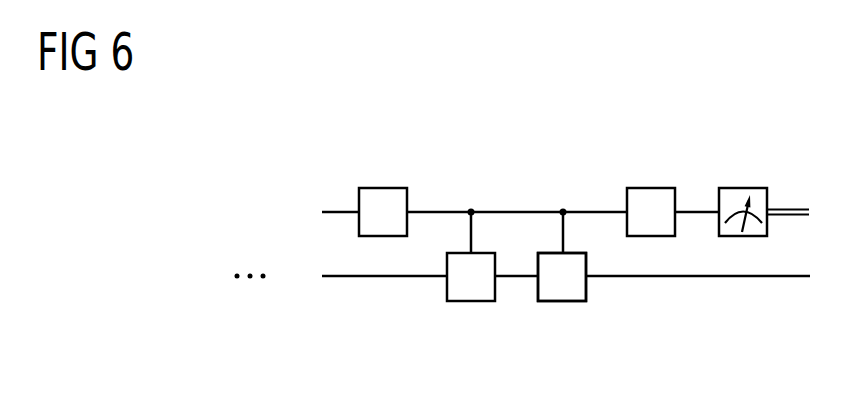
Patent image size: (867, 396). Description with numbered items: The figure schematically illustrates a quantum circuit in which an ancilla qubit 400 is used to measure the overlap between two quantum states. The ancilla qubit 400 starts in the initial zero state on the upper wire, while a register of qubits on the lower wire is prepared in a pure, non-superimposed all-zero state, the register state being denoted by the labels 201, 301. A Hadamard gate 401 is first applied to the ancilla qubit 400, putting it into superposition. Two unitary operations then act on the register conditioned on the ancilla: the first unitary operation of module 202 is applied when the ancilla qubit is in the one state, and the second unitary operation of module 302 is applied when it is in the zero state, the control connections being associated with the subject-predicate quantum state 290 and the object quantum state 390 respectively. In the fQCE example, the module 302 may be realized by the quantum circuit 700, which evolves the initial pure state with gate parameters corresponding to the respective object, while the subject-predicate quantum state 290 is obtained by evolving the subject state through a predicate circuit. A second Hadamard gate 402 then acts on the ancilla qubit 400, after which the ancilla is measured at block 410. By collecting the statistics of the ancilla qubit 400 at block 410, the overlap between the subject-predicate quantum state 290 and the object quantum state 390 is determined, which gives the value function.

The ancilla qubit 400 is at (283, 168).
The quantum register initial state 201 is at (188, 254).
The quantum register initial state 301 is at (202, 255).
The Hadamard gate 401 is at (382, 188).
The subject-predicate quantum state 290 is at (474, 227).
The object quantum state 390 is at (566, 227).
The second Hadamard gate 402 is at (650, 188).
The block 410 is at (742, 188).
The module 202 is at (472, 302).
The module 302 is at (565, 302).
The quantum circuit 700 is at (580, 316).